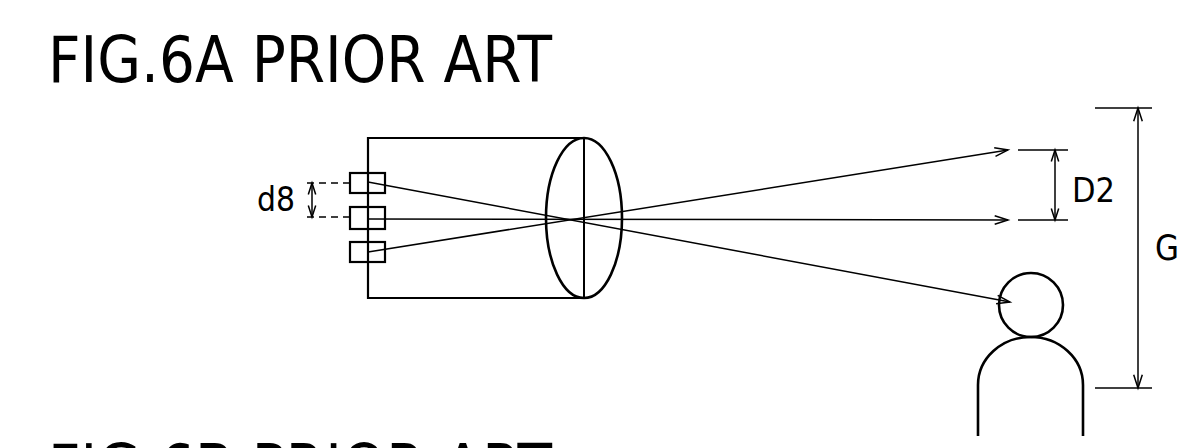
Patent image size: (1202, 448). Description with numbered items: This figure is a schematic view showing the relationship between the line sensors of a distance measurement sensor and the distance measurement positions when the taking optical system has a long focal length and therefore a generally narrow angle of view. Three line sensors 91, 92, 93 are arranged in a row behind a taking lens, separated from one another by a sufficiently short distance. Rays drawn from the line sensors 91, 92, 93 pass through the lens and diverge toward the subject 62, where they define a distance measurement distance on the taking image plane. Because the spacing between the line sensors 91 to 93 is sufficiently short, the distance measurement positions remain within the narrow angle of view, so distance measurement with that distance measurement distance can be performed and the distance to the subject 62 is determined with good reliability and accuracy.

The line sensor 91 is at (350, 172).
The line sensor 92 is at (350, 229).
The line sensor 93 is at (363, 264).
The subject 62 is at (1000, 388).